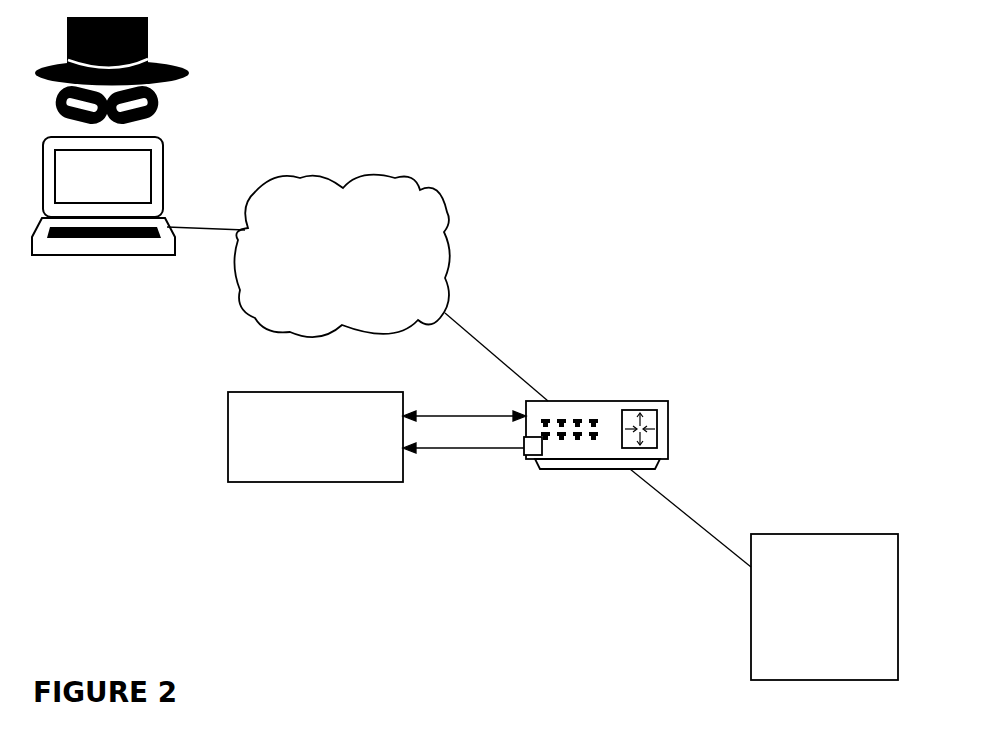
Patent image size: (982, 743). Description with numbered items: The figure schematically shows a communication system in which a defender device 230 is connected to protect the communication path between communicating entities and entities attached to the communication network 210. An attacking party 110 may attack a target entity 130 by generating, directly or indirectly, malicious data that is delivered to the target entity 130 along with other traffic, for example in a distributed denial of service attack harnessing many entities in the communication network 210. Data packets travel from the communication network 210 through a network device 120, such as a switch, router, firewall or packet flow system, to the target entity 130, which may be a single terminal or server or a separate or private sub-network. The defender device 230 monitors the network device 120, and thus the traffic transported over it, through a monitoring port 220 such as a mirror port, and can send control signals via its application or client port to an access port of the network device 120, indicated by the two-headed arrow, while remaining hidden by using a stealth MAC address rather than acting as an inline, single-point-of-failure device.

The attacking party 110 is at (105, 256).
The network device 120 is at (634, 401).
The target entity 130 is at (812, 534).
The communication network 210 is at (448, 246).
The monitoring port 220 is at (527, 456).
The defender device 230 is at (285, 483).